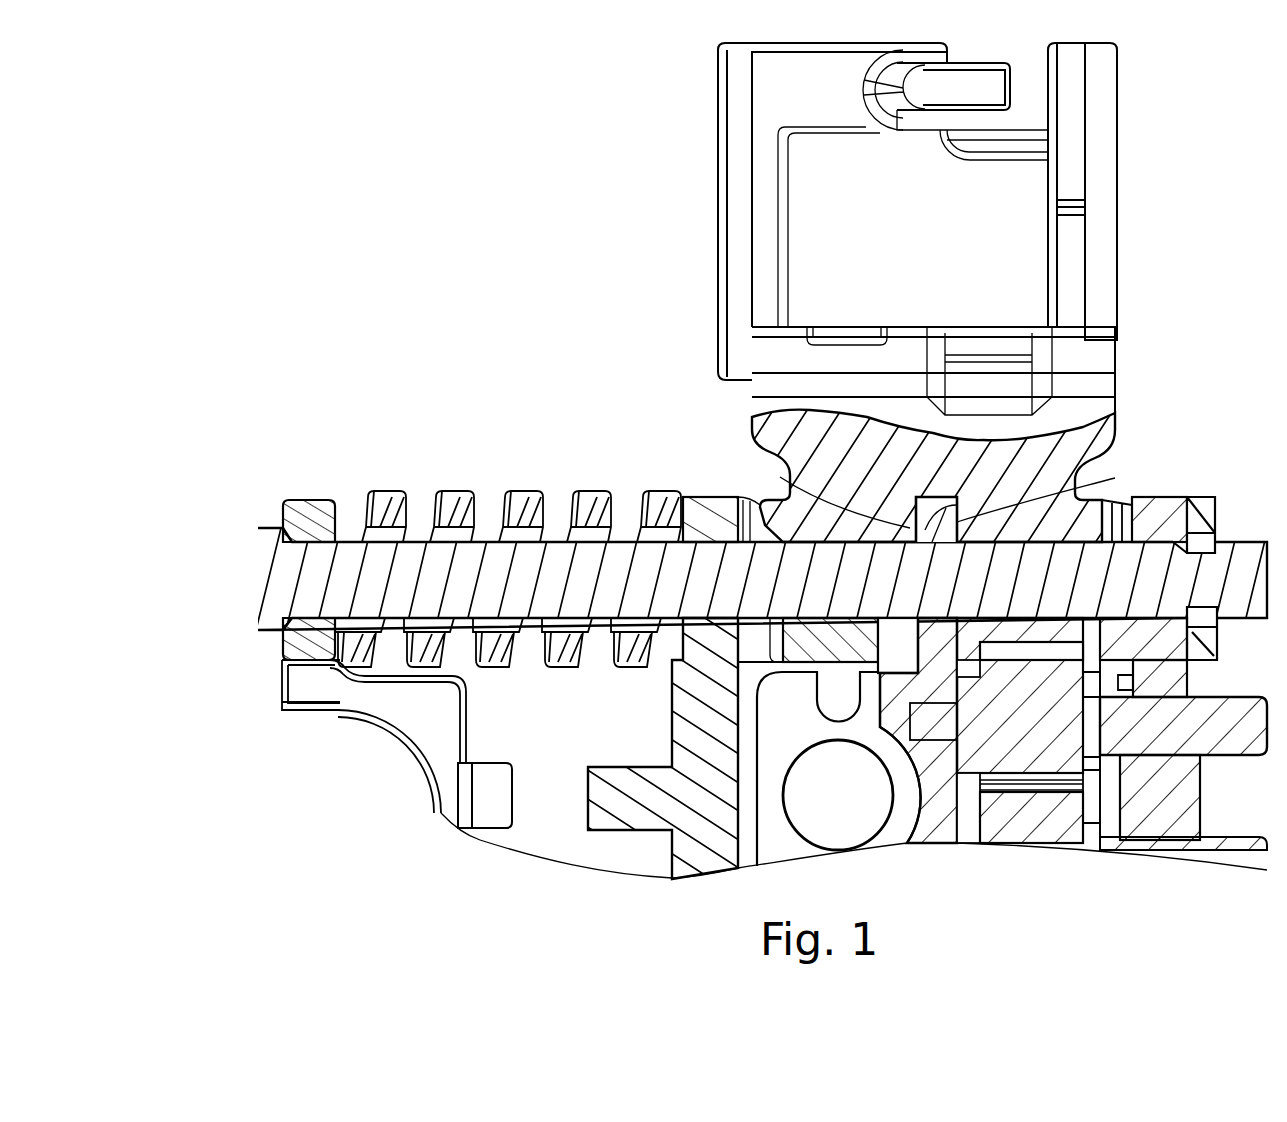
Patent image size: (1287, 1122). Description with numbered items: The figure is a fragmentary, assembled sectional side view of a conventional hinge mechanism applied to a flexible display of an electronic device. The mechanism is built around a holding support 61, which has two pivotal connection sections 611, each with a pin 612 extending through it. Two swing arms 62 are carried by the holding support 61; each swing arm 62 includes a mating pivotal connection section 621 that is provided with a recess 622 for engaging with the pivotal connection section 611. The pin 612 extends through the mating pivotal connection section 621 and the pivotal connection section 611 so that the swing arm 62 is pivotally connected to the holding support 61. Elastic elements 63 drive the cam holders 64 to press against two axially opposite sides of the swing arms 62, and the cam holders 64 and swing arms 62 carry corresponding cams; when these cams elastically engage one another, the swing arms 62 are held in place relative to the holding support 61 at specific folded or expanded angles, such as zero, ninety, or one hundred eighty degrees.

The holding support 61 is at (935, 830).
The pivotal connection section 611 is at (1083, 508).
The pin 612 is at (270, 577).
The swing arm 62 is at (915, 301).
The mating pivotal connection section 621 is at (1095, 495).
The recess 622 is at (780, 477).
The elastic element 63 is at (394, 492).
The cam holder 64 is at (705, 500).